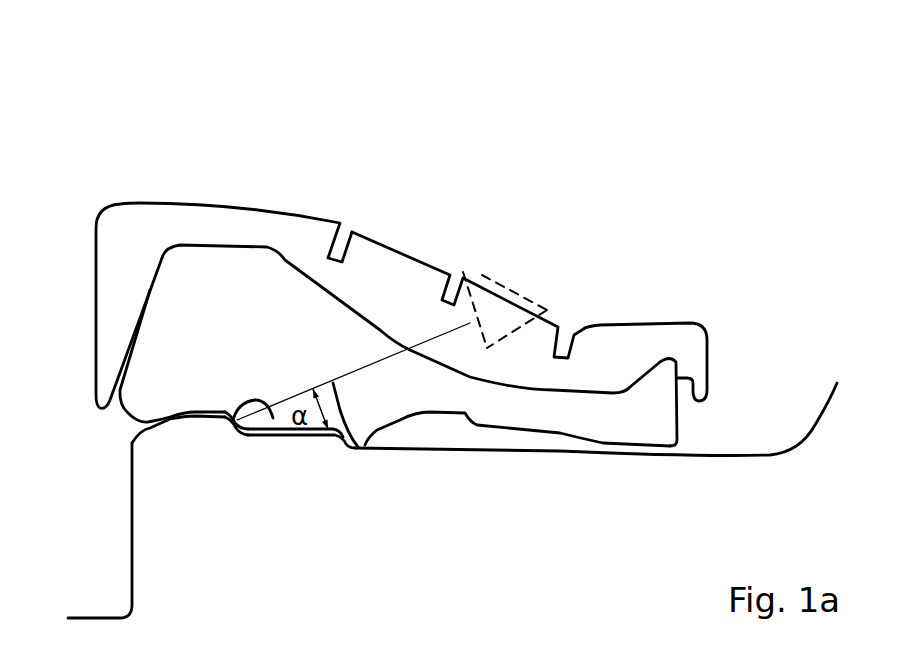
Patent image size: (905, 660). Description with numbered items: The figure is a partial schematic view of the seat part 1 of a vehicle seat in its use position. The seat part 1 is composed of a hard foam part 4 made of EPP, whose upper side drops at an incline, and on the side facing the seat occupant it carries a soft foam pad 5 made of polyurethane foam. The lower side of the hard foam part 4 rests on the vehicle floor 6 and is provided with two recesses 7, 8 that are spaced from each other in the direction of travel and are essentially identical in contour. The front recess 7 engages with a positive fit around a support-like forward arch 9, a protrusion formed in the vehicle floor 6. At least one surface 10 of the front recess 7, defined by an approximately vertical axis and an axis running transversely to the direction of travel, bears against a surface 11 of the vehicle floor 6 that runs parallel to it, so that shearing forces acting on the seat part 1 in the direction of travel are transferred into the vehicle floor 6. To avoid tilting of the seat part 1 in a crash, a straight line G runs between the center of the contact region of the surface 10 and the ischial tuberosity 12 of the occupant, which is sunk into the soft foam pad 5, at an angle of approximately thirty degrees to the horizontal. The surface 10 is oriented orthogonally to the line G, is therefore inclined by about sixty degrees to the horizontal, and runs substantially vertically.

The seat part 1 is at (160, 168).
The hard foam part 4 is at (281, 339).
The soft foam pad 5 is at (400, 277).
The vehicle floor 6 is at (132, 540).
The front recess 7 is at (196, 410).
The recess 8 is at (440, 415).
The forward arch 9 is at (198, 425).
The surface 10 is at (267, 437).
The surface 11 is at (213, 430).
The ischial tuberosity 12 is at (490, 317).
The straight line G is at (365, 449).